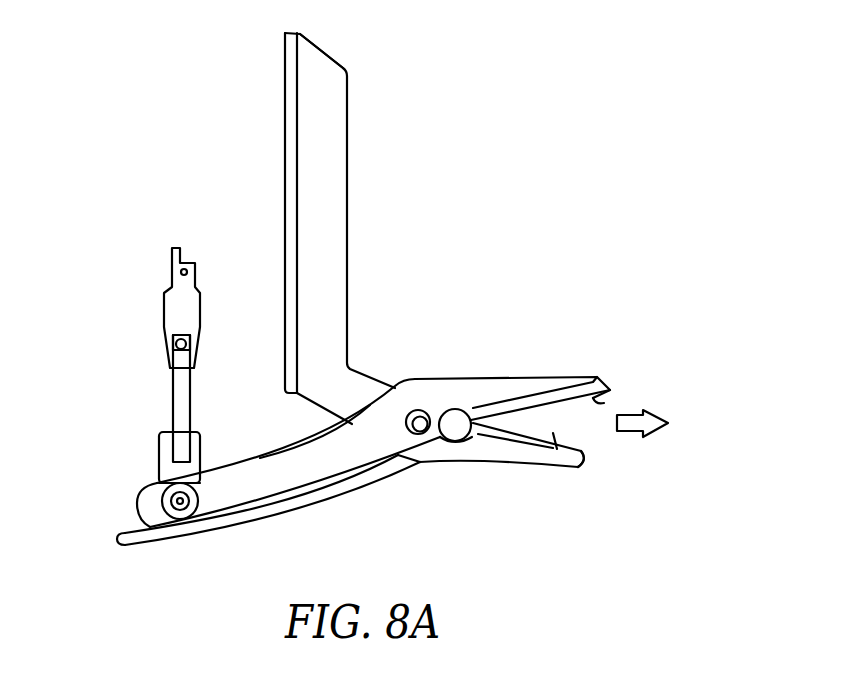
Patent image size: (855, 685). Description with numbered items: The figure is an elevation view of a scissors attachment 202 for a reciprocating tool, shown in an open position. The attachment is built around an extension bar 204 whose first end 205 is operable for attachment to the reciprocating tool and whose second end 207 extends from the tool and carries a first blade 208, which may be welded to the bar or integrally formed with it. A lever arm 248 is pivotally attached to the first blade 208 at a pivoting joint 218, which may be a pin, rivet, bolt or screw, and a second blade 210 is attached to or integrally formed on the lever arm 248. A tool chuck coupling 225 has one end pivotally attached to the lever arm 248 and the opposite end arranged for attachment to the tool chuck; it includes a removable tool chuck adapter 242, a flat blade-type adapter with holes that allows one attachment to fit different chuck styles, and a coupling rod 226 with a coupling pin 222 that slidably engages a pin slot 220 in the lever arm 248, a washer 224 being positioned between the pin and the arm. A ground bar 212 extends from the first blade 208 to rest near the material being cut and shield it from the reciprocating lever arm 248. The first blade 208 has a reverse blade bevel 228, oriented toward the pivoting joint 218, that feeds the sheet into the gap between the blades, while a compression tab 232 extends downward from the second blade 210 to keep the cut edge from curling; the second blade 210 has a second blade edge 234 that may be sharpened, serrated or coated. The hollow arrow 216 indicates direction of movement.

The scissors attachment 202 is at (509, 137).
The extension bar 204 is at (322, 220).
The first end 205 is at (357, 100).
The second end 207 is at (359, 346).
The first blade 208 is at (512, 452).
The second blade 210 is at (543, 379).
The ground bar 212 is at (282, 518).
The direction of movement arrow 216 is at (668, 422).
The pivoting joint 218 is at (421, 410).
The pin slot 220 is at (151, 498).
The coupling pin 222 is at (181, 501).
The washer 224 is at (197, 498).
The tool chuck coupling 225 is at (211, 389).
The coupling rod 226 is at (172, 404).
The reverse blade bevel 228 is at (589, 453).
The compression tab 232 is at (468, 444).
The second blade edge 234 is at (605, 403).
The tool chuck adapter 242 is at (162, 326).
The lever arm 248 is at (312, 455).